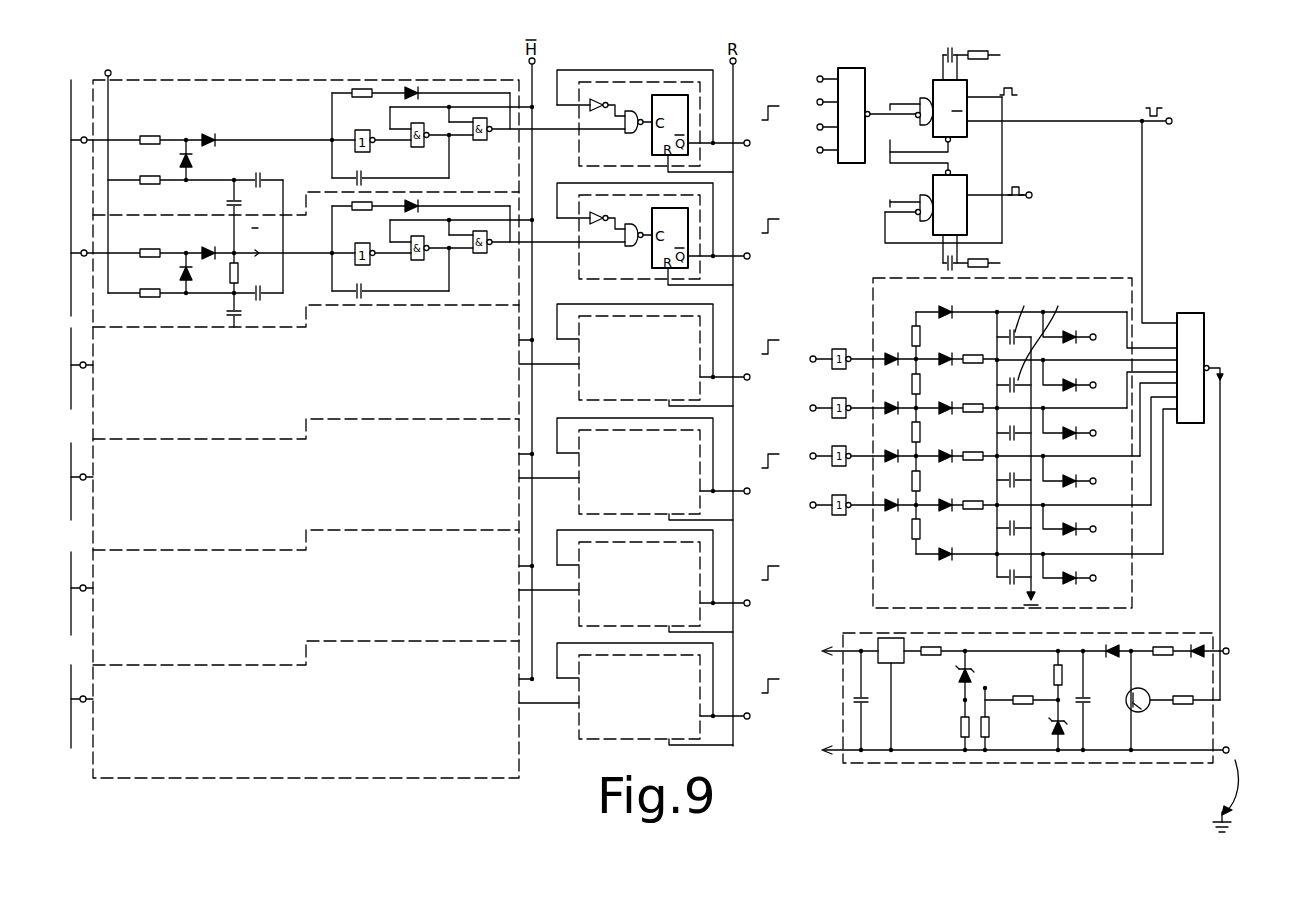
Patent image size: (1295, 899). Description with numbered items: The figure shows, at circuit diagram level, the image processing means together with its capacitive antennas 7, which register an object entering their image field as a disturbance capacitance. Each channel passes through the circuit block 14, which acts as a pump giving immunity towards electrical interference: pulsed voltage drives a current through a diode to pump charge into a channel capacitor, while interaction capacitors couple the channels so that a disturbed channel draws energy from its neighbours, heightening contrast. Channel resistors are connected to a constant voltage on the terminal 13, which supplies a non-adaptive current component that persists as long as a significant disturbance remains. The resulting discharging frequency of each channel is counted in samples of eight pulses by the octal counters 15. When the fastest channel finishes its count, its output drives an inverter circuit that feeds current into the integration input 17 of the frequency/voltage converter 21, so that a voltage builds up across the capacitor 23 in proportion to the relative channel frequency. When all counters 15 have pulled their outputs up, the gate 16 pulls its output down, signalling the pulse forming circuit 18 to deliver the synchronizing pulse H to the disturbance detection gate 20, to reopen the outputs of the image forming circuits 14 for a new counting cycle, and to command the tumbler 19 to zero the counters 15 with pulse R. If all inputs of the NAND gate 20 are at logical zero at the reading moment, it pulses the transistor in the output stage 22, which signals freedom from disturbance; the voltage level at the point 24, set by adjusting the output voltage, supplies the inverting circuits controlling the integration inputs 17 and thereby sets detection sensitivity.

The capacitive antennas 7 is at (79, 137).
The terminal 13 is at (111, 75).
The circuit block 14 is at (208, 80).
The octal counters 15 is at (633, 82).
The gate 16 is at (841, 69).
The integration input 17 is at (858, 412).
The pulse forming circuit 18 is at (934, 80).
The tumbler 19 is at (933, 178).
The disturbance detection gate 20 is at (1182, 313).
The frequency/voltage converter 21 is at (1025, 364).
The output stage 22 is at (1050, 731).
The capacitor 23 is at (1083, 385).
The point 24 is at (962, 701).